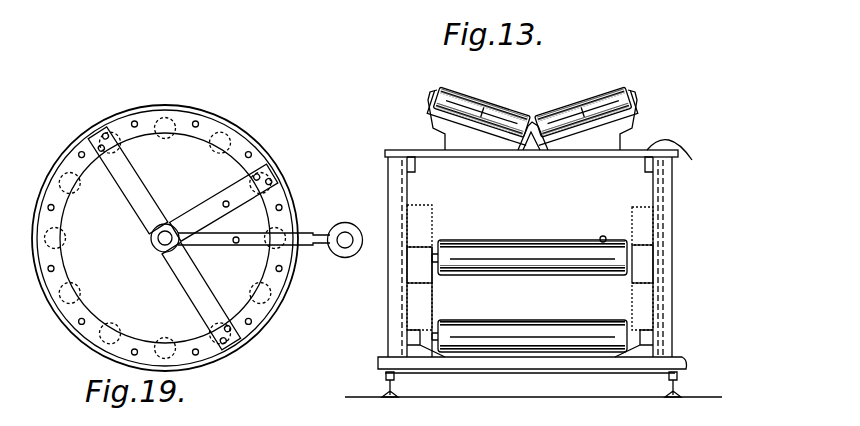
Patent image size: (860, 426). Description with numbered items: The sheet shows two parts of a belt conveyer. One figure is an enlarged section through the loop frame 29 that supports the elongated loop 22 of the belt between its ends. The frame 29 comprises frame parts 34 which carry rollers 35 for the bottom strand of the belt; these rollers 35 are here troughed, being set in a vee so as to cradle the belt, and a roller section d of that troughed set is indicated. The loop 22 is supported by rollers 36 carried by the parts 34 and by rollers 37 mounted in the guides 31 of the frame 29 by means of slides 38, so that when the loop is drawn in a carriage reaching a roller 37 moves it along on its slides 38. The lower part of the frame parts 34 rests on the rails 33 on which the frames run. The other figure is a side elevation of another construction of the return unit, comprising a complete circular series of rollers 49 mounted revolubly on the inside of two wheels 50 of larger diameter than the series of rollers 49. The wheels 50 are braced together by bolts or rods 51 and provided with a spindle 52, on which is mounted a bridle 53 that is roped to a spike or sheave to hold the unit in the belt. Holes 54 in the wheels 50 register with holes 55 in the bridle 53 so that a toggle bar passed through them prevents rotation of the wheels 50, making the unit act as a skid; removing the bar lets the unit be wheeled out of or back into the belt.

In FIG. 19, the rollers 49 is at (216, 144).
In FIG. 19, the wheels 50 is at (242, 148).
In FIG. 19, the bolts or rods 51 is at (100, 218).
In FIG. 19, the spindle 52 is at (165, 252).
In FIG. 19, the bridle 53 is at (308, 233).
In FIG. 19, the holes 54 is at (223, 205).
In FIG. 19, the holes 55 is at (236, 244).
In FIG. 13, the rollers 35 is at (490, 111).
In FIG. 13, the trough roller section d is at (603, 102).
In FIG. 13, the frame parts 34 is at (388, 183).
In FIG. 13, the frame 29 is at (432, 213).
In FIG. 13, the guides 31 is at (410, 278).
In FIG. 13, the slides 38 is at (638, 258).
In FIG. 13, the rollers 37 is at (522, 273).
In FIG. 13, the loop 22 is at (600, 244).
In FIG. 13, the rollers 36 is at (487, 330).
In FIG. 13, the rails 33 is at (385, 388).